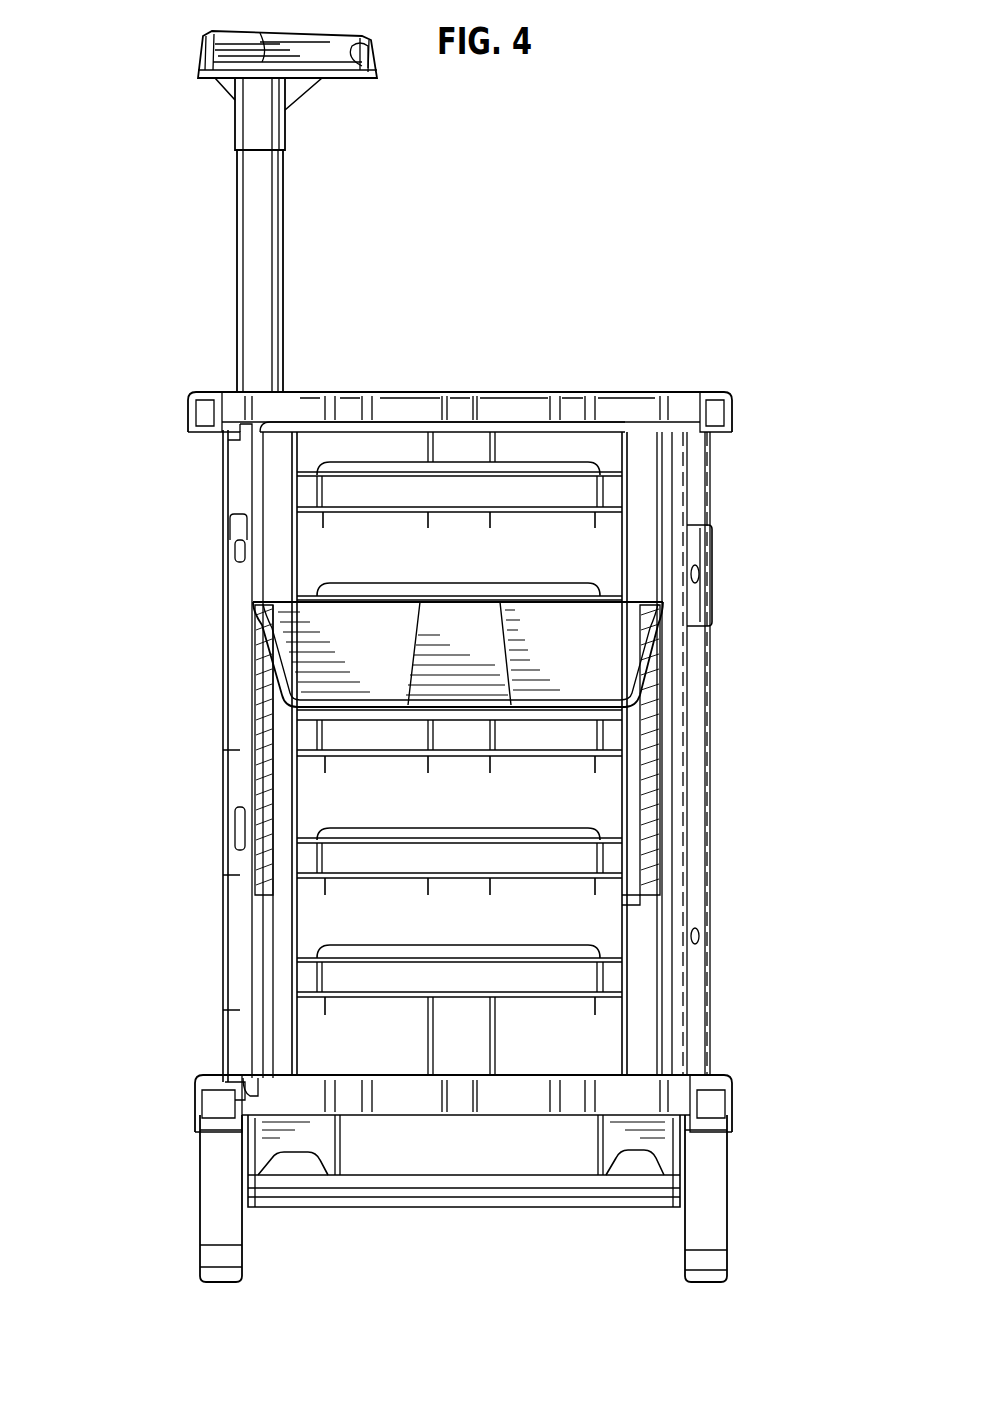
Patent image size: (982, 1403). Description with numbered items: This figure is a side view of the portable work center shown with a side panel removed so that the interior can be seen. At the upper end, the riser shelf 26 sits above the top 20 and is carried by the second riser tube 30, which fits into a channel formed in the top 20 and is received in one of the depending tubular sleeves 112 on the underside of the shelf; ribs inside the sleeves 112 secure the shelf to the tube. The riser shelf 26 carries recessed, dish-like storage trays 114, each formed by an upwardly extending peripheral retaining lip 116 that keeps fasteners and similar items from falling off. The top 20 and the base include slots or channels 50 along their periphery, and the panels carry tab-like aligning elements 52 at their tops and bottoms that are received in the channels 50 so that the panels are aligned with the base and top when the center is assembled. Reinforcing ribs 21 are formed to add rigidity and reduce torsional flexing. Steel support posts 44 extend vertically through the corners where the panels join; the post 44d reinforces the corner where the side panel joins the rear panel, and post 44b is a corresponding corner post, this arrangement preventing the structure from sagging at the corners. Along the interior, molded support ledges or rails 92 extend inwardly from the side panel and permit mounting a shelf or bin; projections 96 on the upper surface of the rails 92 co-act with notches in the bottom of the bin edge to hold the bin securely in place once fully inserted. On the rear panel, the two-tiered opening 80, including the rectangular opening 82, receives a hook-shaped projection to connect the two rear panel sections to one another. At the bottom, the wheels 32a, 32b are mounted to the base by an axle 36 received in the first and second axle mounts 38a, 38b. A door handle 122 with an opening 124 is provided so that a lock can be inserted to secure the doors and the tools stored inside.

The top 20 is at (460, 393).
The reinforcing ribs 21 is at (370, 395).
The riser shelf 26 is at (194, 88).
The second riser tube 30 is at (282, 234).
The wheel 32a is at (730, 1150).
The wheel 32b is at (202, 1200).
The axle 36 is at (335, 1195).
The first axle mount 38a is at (660, 1175).
The second axle mount 38b is at (265, 1175).
The steel support posts 44 is at (458, 654).
The support post 44b is at (655, 692).
The support post 44d is at (265, 692).
The channels 50 is at (246, 422).
The tab-like aligning elements 52 is at (228, 432).
The two-tiered opening 80 is at (239, 548).
The rectangular opening 82 is at (238, 520).
The rails 92 is at (612, 836).
The projections 96 is at (622, 900).
The tubular sleeves 112 is at (285, 130).
The storage trays 114 is at (268, 56).
The peripheral retaining lip 116 is at (348, 64).
The handle 122 is at (708, 540).
The opening 124 is at (699, 574).